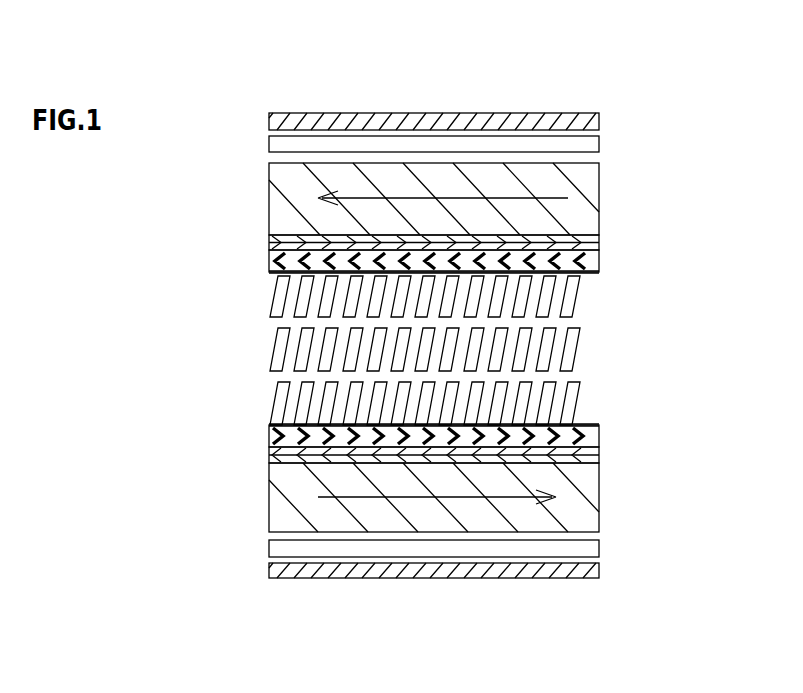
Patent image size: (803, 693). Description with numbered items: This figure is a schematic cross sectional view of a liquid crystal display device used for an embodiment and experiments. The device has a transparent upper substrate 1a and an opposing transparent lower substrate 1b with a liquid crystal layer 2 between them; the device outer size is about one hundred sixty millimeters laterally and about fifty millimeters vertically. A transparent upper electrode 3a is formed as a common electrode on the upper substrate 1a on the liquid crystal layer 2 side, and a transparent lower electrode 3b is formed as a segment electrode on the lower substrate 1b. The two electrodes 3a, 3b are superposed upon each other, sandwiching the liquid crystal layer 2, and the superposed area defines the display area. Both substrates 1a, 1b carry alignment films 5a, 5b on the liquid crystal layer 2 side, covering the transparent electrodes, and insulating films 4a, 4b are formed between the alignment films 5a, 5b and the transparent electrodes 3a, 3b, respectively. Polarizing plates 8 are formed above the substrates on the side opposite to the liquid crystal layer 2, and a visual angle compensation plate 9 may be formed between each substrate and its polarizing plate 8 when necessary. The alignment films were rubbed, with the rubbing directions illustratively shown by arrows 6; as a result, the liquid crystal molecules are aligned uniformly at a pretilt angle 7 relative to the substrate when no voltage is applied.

The transparent upper substrate 1a is at (600, 198).
The transparent lower substrate 1b is at (600, 500).
The liquid crystal layer 2 is at (460, 349).
The transparent upper electrode 3a is at (600, 242).
The transparent lower electrode 3b is at (600, 455).
The insulating film 4a is at (600, 260).
The insulating film 4b is at (600, 440).
The alignment film 5a is at (600, 274).
The alignment film 5b is at (603, 422).
The arrows 6 is at (405, 195).
The angle 7 is at (605, 404).
The polarizing plates 8 is at (600, 122).
The visual angle compensation plate 9 is at (600, 146).